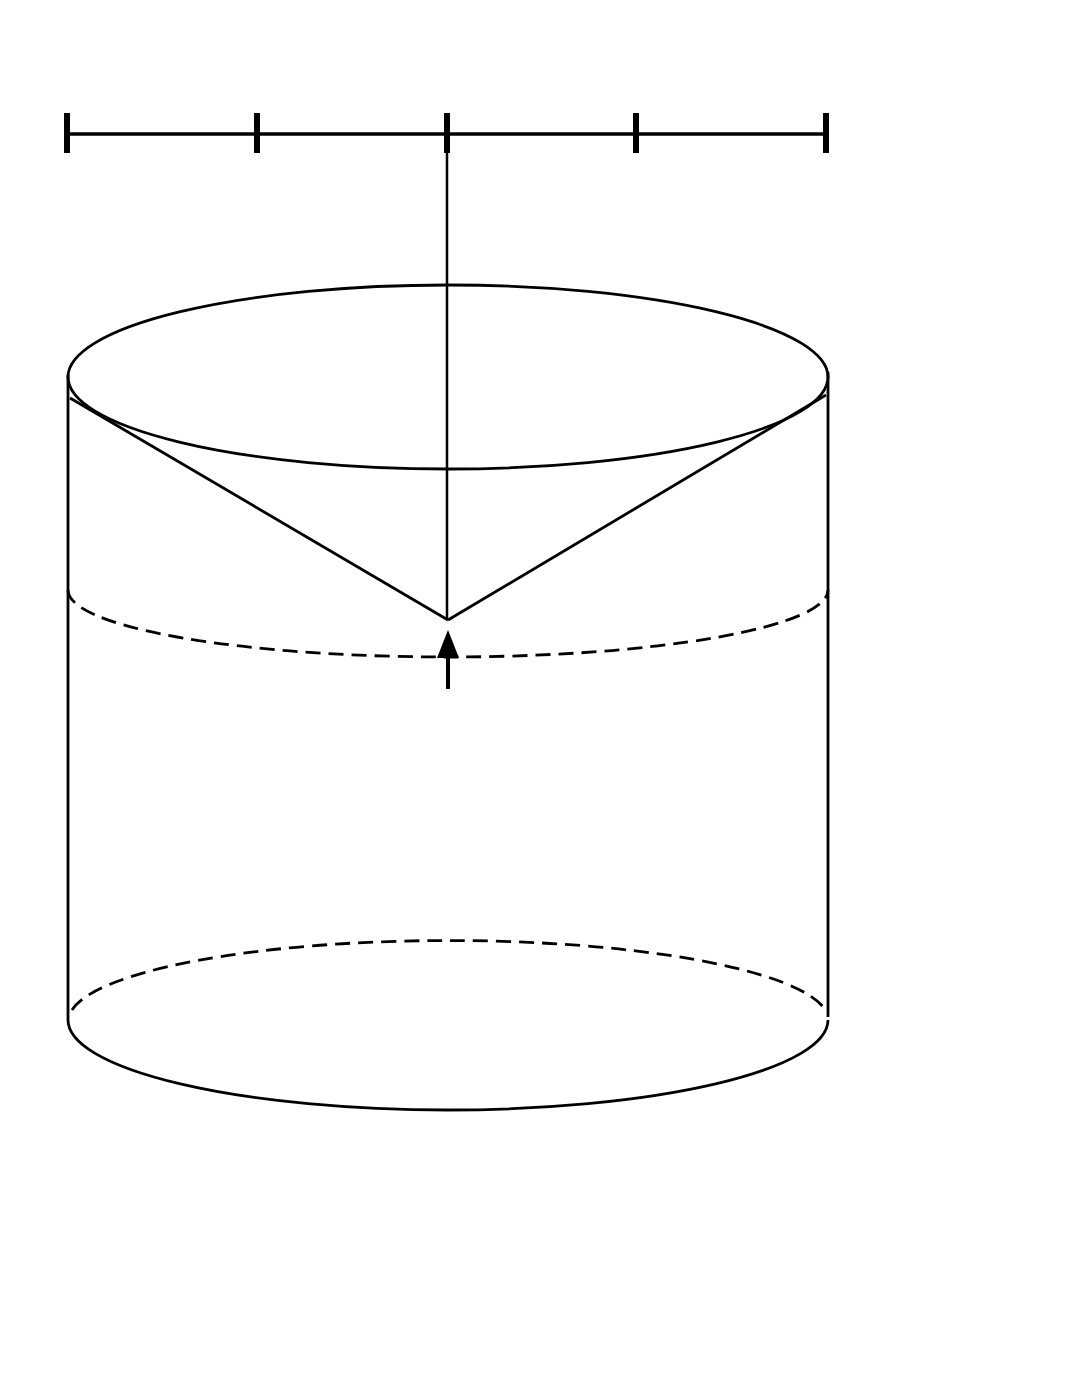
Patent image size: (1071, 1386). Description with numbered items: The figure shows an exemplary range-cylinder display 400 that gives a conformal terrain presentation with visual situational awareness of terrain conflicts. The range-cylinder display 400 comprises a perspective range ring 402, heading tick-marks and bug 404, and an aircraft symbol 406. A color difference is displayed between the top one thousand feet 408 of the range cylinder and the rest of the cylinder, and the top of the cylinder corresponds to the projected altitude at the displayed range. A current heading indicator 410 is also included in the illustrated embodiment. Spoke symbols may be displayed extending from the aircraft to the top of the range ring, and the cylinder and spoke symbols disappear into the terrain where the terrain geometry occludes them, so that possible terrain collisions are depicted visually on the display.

The range-cylinder display 400 is at (716, 90).
The perspective range ring 402 is at (688, 318).
The heading tick-marks and bug 404 is at (333, 135).
The aircraft symbol 406 is at (444, 662).
The top 1000 feet of the range cylinder 408 is at (803, 508).
The current heading indicator 410 is at (449, 306).